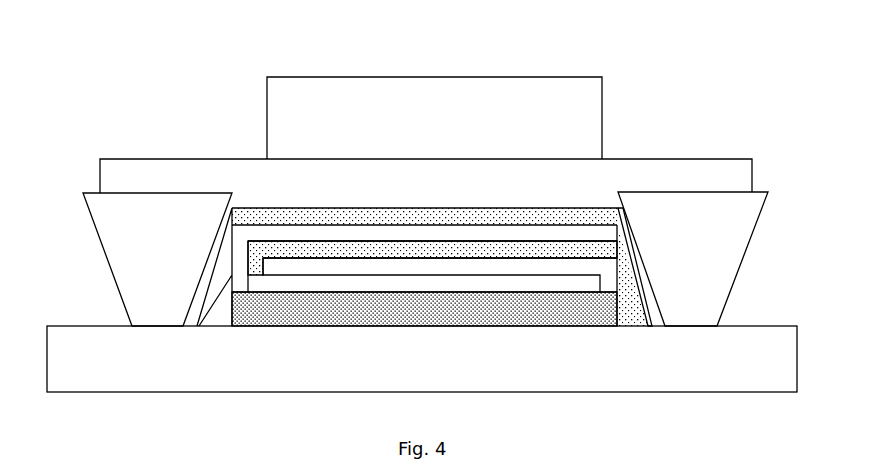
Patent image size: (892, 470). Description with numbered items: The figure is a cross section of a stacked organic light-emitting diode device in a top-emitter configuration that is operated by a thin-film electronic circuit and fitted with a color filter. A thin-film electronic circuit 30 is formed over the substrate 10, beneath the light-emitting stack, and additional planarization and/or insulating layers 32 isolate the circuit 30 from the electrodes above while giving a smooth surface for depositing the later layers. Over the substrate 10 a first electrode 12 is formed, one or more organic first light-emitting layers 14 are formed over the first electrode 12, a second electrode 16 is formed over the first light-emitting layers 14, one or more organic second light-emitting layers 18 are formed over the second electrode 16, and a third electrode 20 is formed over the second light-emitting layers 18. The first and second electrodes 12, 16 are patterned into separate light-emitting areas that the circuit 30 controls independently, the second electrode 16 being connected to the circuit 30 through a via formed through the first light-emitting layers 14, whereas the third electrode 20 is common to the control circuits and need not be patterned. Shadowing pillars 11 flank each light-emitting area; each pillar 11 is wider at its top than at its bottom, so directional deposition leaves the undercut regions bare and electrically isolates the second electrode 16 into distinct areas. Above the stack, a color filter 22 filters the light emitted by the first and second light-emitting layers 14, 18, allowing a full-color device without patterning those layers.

The substrate 10 is at (797, 378).
The shadowing pillar 11 is at (202, 276).
The first electrode 12 is at (519, 260).
The first light-emitting layer 14 is at (433, 245).
The second electrode 16 is at (583, 225).
The second light-emitting layer 18 is at (303, 208).
The third electrode 20 is at (385, 159).
The color filter 22 is at (498, 77).
The thin-film electronic circuit 30 is at (532, 327).
The planarization and/or insulating layer 32 is at (364, 292).